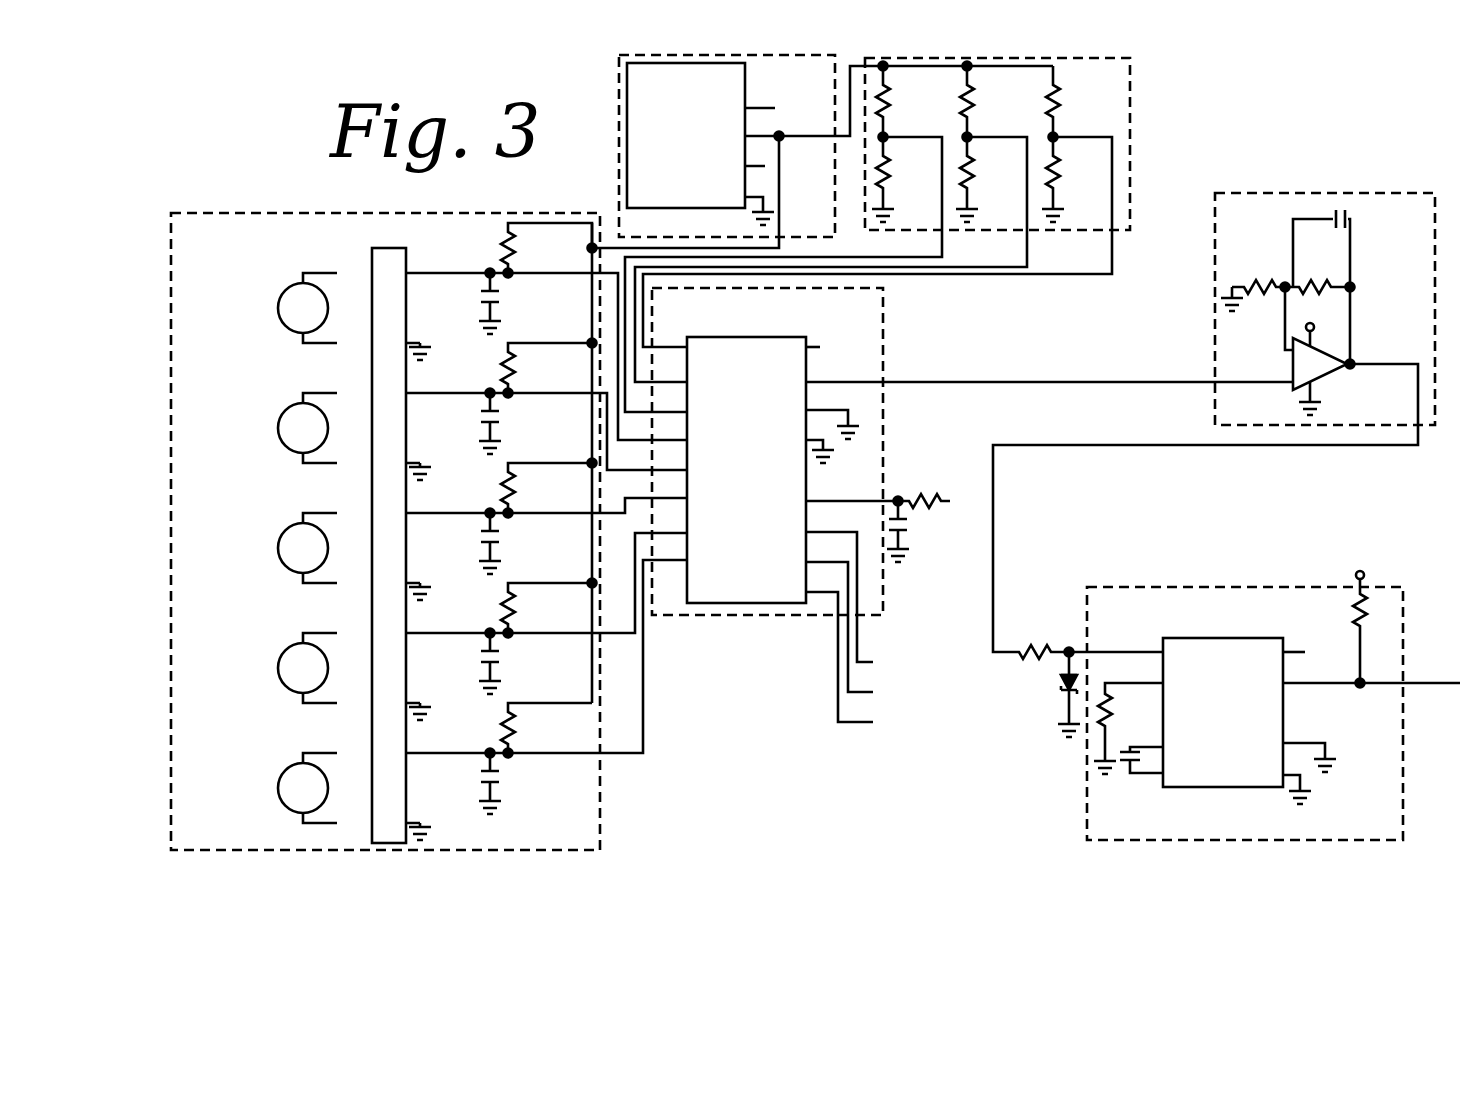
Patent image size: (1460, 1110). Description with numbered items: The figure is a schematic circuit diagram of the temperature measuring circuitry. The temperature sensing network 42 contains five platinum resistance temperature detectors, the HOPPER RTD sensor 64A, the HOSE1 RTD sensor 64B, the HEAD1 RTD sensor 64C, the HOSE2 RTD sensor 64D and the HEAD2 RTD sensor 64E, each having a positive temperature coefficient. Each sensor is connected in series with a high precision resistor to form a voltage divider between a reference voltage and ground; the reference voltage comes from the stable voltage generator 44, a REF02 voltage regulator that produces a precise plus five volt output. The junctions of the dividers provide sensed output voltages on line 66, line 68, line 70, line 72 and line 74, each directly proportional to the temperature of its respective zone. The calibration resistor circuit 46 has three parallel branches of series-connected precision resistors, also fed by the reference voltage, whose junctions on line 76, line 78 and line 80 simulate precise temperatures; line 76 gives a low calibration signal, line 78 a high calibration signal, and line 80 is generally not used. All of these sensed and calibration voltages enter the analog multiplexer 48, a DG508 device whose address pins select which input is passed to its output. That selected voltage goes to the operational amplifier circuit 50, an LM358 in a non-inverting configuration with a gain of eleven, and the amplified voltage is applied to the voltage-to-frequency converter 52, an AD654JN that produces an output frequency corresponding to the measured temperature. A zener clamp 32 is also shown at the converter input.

The input clamp node (R11 / zener D1) 32 is at (1080, 648).
The temperature sensing network 42 is at (440, 531).
The stable voltage generator 44 is at (617, 172).
The calibration resistor circuit 46 is at (1130, 150).
The analog multiplexer 48 is at (883, 400).
The operational amplifier circuit 50 is at (1340, 193).
The voltage-to-frequency converter 52 is at (1262, 587).
The HOPPER RTD sensor 64A is at (296, 753).
The HOSE1 RTD sensor 64B is at (296, 633).
The HEAD1 RTD sensor 64C is at (296, 513).
The HOSE2 RTD sensor 64D is at (296, 393).
The HEAD2 RTD sensor 64E is at (296, 273).
The line 66 is at (643, 722).
The line 68 is at (567, 635).
The line 70 is at (567, 515).
The line 72 is at (567, 395).
The line 74 is at (567, 275).
The line 76 is at (913, 257).
The line 78 is at (977, 267).
The line 80 is at (1067, 274).